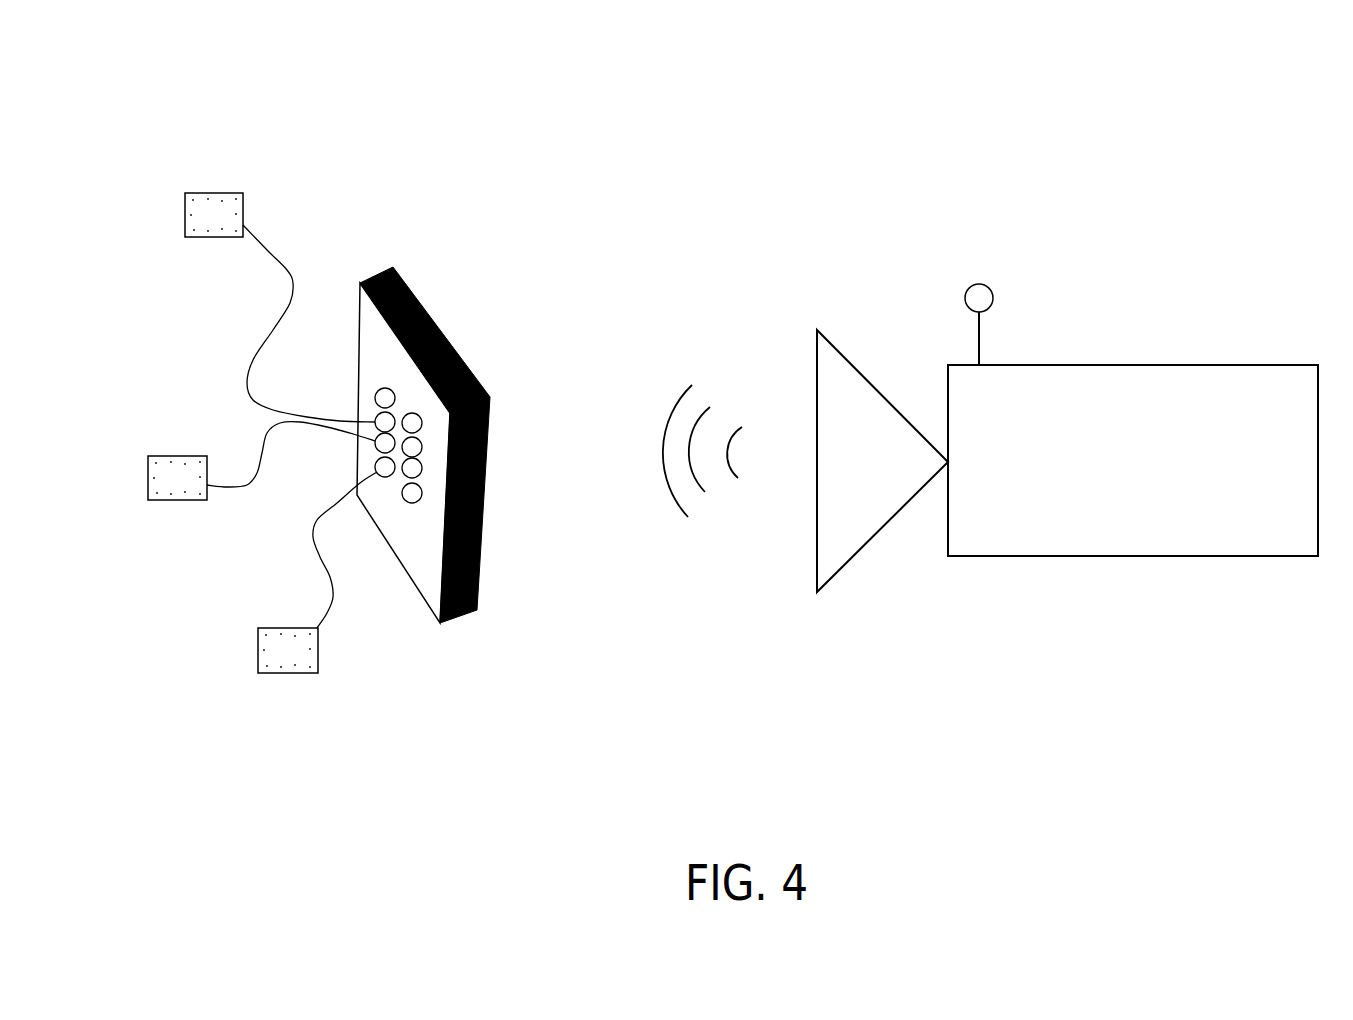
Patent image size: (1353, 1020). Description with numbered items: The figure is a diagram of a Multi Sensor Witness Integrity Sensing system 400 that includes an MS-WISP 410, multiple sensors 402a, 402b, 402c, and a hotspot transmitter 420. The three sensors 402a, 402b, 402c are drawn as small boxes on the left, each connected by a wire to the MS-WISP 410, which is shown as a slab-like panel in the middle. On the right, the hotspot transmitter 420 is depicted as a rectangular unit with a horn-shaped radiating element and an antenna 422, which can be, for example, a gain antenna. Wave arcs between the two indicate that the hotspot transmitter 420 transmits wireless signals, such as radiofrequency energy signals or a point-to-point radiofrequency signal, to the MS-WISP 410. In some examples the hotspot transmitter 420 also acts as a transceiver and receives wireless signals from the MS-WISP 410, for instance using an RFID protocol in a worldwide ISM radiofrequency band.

The Multi Sensor Witness Integrity Sensing system 400 is at (131, 55).
The sensor 402a is at (216, 178).
The sensor 402b is at (174, 450).
The sensor 402c is at (248, 650).
The MS-WISP 410 is at (503, 258).
The hotspot transmitter 420 is at (999, 384).
The antenna 422 is at (982, 285).